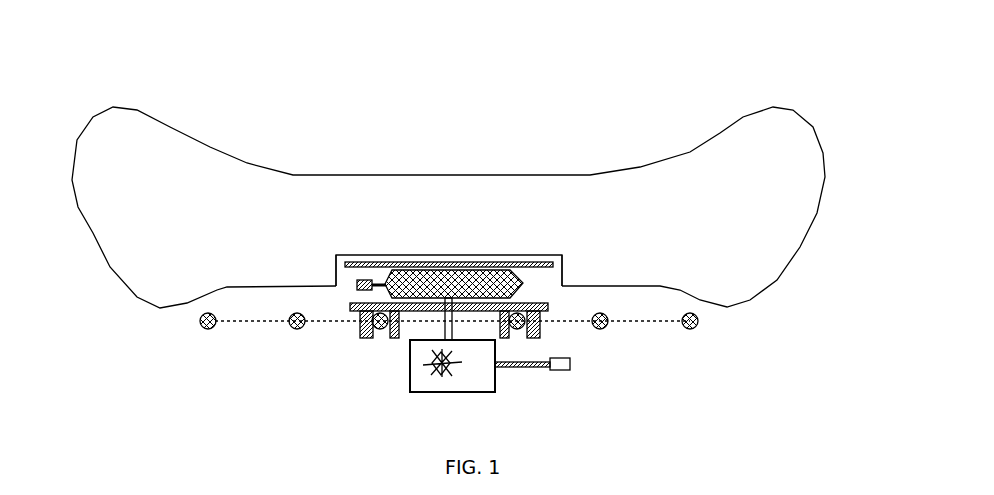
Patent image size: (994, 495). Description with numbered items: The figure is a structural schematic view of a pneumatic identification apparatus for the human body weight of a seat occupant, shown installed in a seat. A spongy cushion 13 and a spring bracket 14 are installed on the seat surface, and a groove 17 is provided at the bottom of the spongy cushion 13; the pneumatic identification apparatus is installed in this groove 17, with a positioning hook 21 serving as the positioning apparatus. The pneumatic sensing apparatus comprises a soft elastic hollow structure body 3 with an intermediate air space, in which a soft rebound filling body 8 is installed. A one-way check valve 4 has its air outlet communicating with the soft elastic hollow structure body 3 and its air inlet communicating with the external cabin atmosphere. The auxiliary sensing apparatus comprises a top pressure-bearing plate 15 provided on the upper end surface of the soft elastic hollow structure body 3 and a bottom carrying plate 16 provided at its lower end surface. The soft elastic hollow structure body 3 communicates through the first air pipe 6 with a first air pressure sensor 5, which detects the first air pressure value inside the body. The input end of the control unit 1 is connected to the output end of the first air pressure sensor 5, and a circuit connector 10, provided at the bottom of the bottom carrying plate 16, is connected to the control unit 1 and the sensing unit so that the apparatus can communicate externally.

The control unit 1 is at (460, 390).
The soft elastic hollow structure body 3 is at (389, 257).
The one-way check valve 4 is at (357, 287).
The first air pressure sensor 5 is at (440, 360).
The first air pipe 6 is at (432, 322).
The soft rebound filling body 8 is at (445, 262).
The circuit connector 10 is at (571, 369).
The spongy cushion 13 is at (770, 143).
The spring bracket 14 is at (200, 328).
The top pressure-bearing plate 15 is at (532, 255).
The bottom carrying plate 16 is at (482, 313).
The groove 17 is at (337, 282).
The positioning hook 21 is at (398, 309).